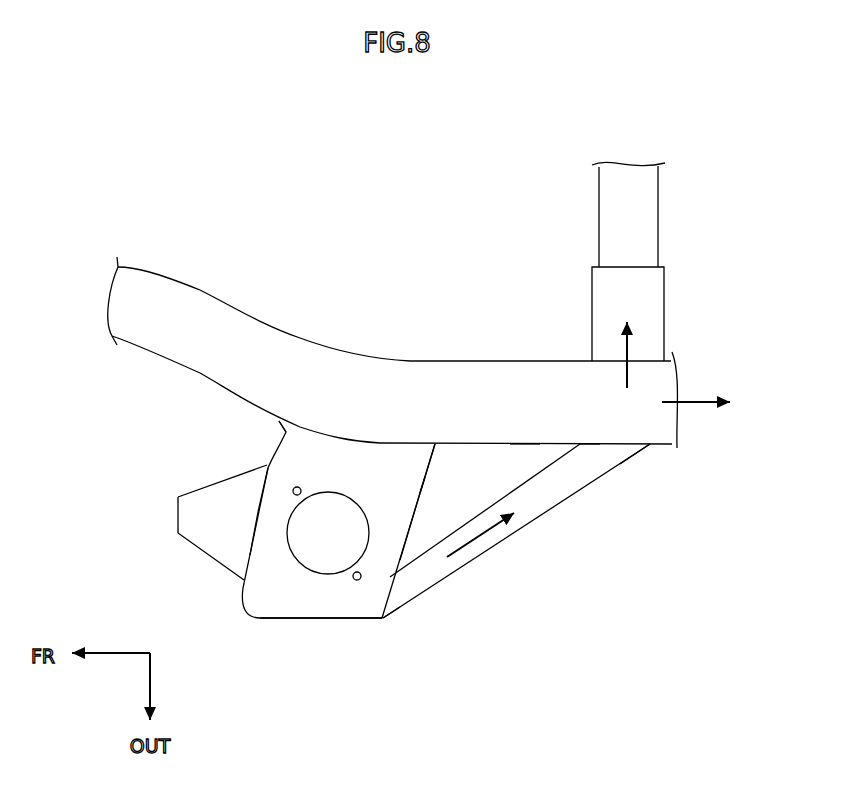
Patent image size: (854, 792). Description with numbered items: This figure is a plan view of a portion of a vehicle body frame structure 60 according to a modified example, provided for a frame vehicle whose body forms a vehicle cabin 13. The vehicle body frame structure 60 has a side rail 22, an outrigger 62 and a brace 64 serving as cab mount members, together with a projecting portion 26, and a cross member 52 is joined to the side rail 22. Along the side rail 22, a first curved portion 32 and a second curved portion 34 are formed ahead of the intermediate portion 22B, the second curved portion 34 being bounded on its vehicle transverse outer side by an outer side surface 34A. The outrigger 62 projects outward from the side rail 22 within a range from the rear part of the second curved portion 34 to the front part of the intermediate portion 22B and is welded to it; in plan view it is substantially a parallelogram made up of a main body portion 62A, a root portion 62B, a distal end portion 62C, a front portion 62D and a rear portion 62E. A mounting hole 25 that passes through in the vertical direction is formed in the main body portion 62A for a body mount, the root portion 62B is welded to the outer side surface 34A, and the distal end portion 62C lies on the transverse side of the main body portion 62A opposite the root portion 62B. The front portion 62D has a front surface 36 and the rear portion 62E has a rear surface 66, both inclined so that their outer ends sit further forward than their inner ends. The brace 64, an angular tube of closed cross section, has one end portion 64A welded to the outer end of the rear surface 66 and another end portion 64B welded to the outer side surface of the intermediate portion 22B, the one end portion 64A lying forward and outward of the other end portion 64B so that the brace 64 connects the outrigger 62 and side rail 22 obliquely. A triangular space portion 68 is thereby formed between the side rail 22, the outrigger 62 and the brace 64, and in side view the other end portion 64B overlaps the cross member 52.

The vehicle cabin 13 is at (565, 205).
The side rail 22 is at (487, 358).
The intermediate portion 22B is at (558, 447).
The mounting hole 25 is at (336, 502).
The projecting portion 26 is at (204, 552).
The first curved portion 32 is at (161, 272).
The second curved portion 34 is at (295, 338).
The outer side surface 34A is at (286, 432).
The front surface 36 is at (259, 481).
The cross member 52 is at (659, 214).
The vehicle body frame structure 60 is at (416, 553).
The outrigger 62 is at (323, 622).
The main body portion 62A is at (292, 579).
The root portion 62B is at (395, 450).
The distal end portion 62C is at (339, 605).
The front portion 62D is at (261, 527).
The rear portion 62E is at (400, 520).
The brace 64 is at (498, 549).
The one end portion 64A is at (388, 600).
The other end portion 64B is at (617, 453).
The rear surface 66 is at (420, 490).
The space portion 68 is at (522, 455).